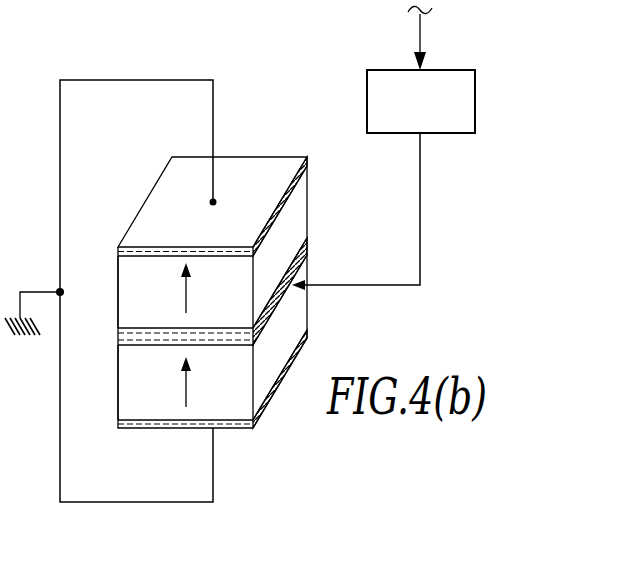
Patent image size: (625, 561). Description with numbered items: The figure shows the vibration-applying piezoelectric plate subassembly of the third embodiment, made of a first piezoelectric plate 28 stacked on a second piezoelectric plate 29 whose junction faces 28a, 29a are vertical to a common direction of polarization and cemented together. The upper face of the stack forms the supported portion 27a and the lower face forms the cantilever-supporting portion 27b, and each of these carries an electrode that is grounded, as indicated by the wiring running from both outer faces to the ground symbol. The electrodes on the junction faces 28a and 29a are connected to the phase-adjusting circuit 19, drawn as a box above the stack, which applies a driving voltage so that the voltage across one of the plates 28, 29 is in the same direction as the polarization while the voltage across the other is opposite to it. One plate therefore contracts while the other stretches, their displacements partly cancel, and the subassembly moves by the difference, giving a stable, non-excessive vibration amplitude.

The phase-adjusting circuit 19 is at (447, 70).
The supported portion 27a is at (235, 170).
The cantilever-supporting portion 27b is at (237, 428).
The first piezoelectric plate 28 is at (144, 166).
The junction face 28a is at (310, 247).
The second piezoelectric plate 29 is at (112, 425).
The junction face 29a is at (308, 256).